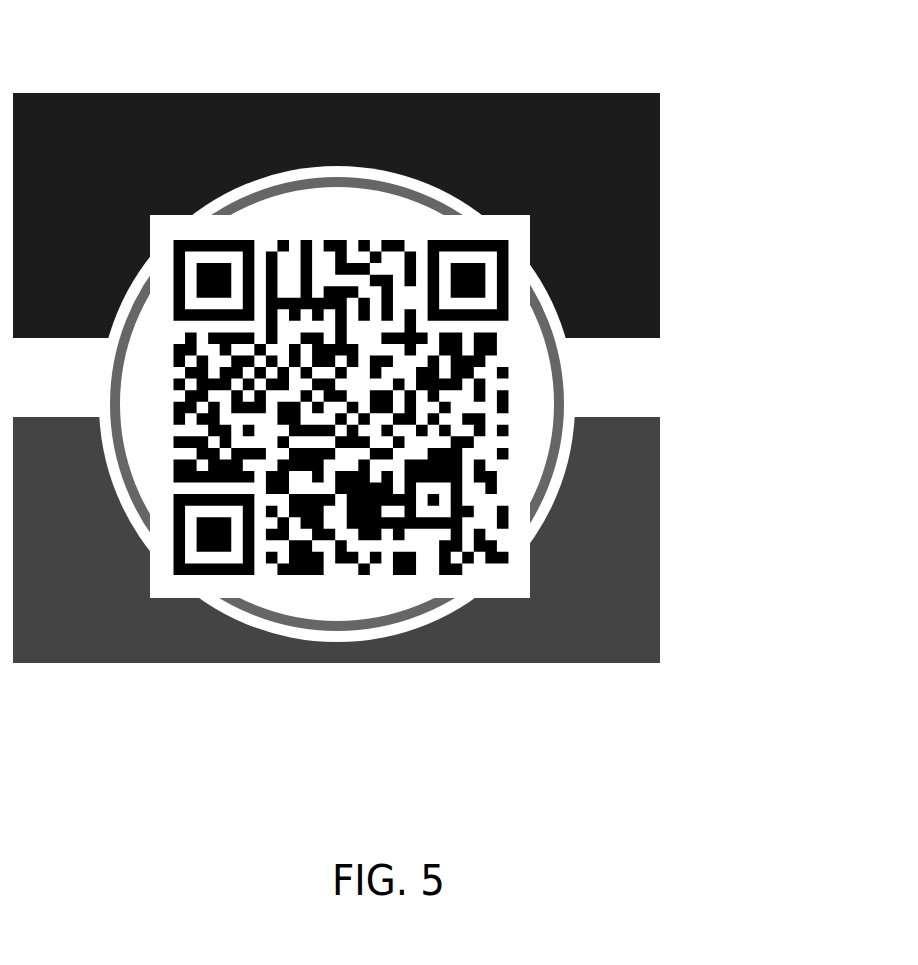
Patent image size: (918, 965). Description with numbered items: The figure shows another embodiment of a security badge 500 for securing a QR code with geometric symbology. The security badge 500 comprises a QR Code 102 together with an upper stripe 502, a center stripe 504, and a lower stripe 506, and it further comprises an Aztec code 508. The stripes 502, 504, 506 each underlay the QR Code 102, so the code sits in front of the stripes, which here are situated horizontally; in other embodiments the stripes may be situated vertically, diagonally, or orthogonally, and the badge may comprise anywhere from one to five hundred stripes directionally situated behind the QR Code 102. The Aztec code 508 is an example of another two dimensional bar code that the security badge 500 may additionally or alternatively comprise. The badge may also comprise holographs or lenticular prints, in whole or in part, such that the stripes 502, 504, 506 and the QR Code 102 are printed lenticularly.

The security badge 500 is at (410, 341).
The upper stripe 502 is at (637, 181).
The center stripe 504 is at (630, 372).
The lower stripe 506 is at (632, 517).
The Aztec code 508 is at (637, 293).
The QR Code 102 is at (402, 237).